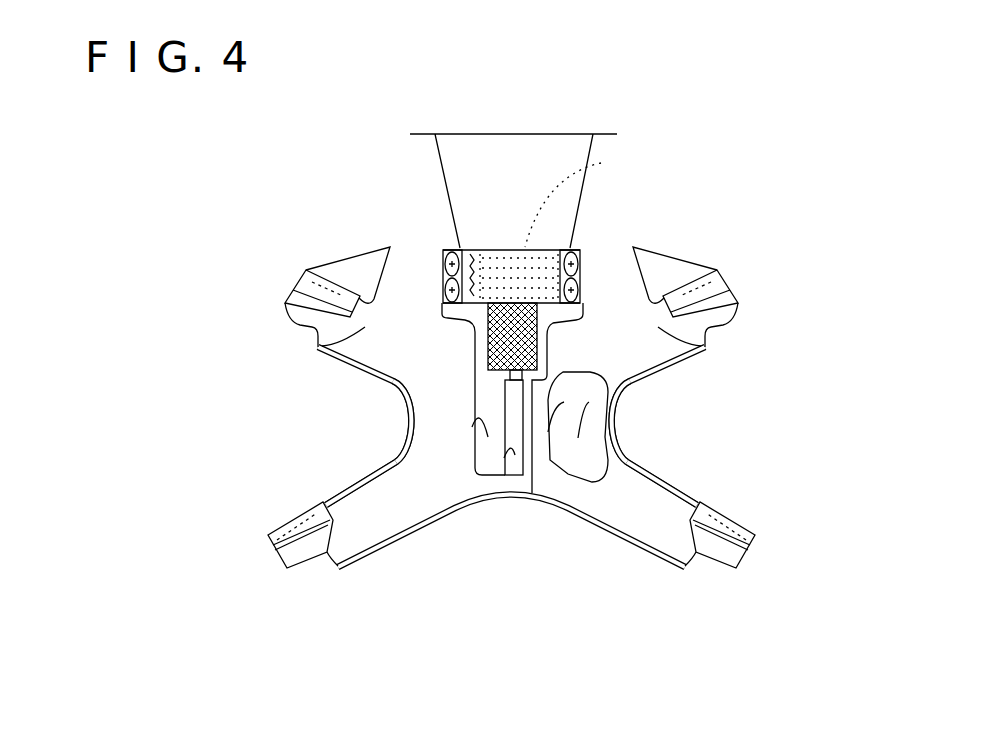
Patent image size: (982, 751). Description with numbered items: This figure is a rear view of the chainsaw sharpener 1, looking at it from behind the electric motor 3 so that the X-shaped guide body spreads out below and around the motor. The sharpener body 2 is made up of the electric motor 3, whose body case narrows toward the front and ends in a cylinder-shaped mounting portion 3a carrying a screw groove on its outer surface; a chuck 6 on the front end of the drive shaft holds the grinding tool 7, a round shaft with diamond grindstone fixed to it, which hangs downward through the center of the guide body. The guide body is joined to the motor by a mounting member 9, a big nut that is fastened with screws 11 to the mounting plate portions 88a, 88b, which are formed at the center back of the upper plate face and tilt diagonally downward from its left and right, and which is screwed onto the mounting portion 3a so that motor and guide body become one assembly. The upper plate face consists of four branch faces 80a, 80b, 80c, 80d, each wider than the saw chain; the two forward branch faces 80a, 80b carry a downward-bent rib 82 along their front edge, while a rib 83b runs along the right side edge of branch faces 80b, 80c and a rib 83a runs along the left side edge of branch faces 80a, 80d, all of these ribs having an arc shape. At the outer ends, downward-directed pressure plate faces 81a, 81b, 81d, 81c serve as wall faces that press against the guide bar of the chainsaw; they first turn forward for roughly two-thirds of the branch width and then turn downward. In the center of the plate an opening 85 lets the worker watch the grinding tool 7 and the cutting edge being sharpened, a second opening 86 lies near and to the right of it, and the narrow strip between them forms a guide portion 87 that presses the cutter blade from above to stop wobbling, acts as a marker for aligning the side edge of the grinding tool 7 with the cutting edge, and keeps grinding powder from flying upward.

The chainsaw sharpener 1 is at (793, 145).
The sharpener body 2 is at (694, 111).
The electric motor 3 is at (540, 157).
The mounting portion 3a is at (586, 196).
The chuck 6 is at (537, 345).
The grinding tool 7 is at (512, 442).
The mounting member 9 is at (506, 258).
The screws 11 is at (577, 290).
The branch face 80a is at (667, 525).
The branch face 80b is at (352, 527).
The branch face 80c is at (700, 341).
The branch face 80d is at (323, 342).
The pressure plate face 81a is at (722, 530).
The pressure plate face 81b is at (298, 532).
The pressure plate face 81c is at (700, 277).
The pressure plate face 81d is at (323, 277).
The rib 82 is at (593, 517).
The rib 83a is at (625, 410).
The rib 83b is at (407, 423).
The opening 85 is at (482, 413).
The opening 86 is at (610, 393).
The guide portion 87 is at (565, 410).
The mounting plate portion 88a is at (444, 249).
The mounting plate portion 88b is at (579, 249).